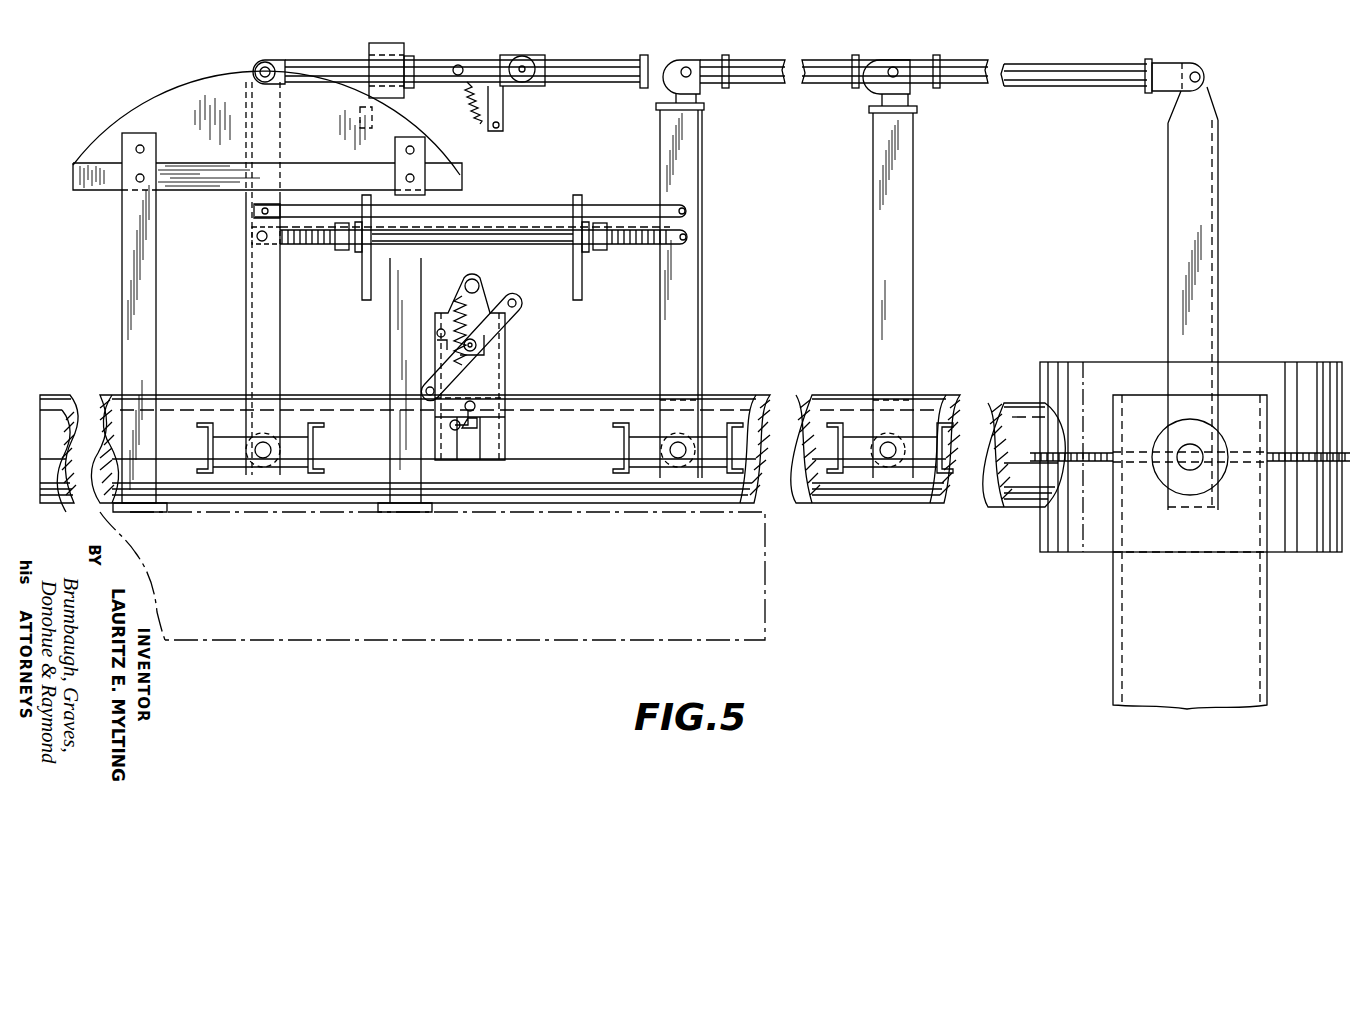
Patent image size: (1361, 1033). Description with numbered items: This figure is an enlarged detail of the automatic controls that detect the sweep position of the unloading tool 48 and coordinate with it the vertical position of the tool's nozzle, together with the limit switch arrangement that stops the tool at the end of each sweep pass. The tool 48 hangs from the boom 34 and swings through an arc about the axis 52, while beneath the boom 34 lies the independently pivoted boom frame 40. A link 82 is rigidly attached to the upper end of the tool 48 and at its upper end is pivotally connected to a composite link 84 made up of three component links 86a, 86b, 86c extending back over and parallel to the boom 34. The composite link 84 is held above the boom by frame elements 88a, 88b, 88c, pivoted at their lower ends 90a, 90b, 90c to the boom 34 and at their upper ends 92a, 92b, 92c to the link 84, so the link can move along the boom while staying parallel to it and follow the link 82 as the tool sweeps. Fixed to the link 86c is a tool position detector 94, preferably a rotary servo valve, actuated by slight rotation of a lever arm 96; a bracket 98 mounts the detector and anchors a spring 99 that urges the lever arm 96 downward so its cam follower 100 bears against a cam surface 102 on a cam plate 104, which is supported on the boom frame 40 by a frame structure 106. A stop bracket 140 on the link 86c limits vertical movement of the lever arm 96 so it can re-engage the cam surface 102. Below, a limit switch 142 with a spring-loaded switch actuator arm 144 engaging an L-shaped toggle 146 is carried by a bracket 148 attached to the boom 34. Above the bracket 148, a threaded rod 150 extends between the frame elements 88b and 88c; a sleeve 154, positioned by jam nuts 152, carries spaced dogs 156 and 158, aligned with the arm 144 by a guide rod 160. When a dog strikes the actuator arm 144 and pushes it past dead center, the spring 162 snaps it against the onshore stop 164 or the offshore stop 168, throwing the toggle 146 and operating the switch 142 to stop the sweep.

The boom 34 is at (816, 505).
The boom frame 40 is at (776, 617).
The unloading tool 48 is at (1130, 622).
The axis 52 is at (1184, 458).
The link 82 is at (1212, 206).
The composite link 84 is at (824, 52).
The component link 86a is at (1094, 48).
The component link 86b is at (758, 66).
The component link 86c is at (433, 64).
The frame element 88a is at (912, 191).
The frame element 88b is at (693, 167).
The frame element 88c is at (262, 286).
The lower pivot 90a is at (887, 460).
The lower pivot 90b is at (676, 460).
The lower pivot 90c is at (261, 460).
The upper pivot 92a is at (900, 68).
The upper pivot 92b is at (710, 36).
The upper pivot 92c is at (270, 60).
The tool position detector 94 is at (542, 38).
The lever arm 96 is at (452, 76).
The bracket 98 is at (522, 92).
The spring 99 is at (478, 106).
The cam follower 100 is at (256, 72).
The cam surface 102 is at (158, 106).
The cam plate 104 is at (96, 186).
The frame structure 106 is at (135, 285).
The stop bracket 140 is at (405, 22).
The limit switch 142 is at (472, 462).
The switch actuator arm 144 is at (514, 312).
The L-shaped toggle 146 is at (480, 382).
The bracket 148 is at (505, 374).
The threaded rod 150 is at (608, 246).
The jam nuts 152 is at (346, 254).
The sleeve 154 is at (553, 246).
The dog 156 is at (392, 243).
The dog 158 is at (576, 198).
The guide rod 160 is at (338, 190).
The spring 162 is at (480, 302).
The onshore stop 164 is at (436, 332).
The offshore stop 168 is at (504, 336).